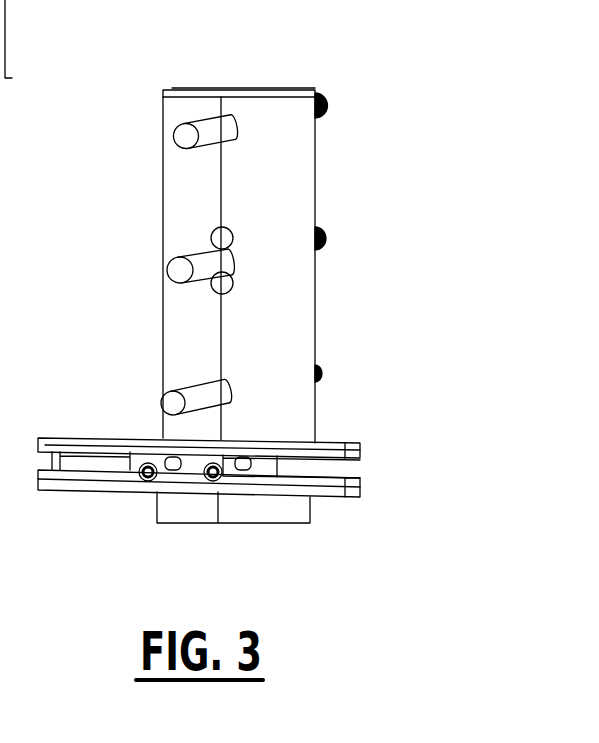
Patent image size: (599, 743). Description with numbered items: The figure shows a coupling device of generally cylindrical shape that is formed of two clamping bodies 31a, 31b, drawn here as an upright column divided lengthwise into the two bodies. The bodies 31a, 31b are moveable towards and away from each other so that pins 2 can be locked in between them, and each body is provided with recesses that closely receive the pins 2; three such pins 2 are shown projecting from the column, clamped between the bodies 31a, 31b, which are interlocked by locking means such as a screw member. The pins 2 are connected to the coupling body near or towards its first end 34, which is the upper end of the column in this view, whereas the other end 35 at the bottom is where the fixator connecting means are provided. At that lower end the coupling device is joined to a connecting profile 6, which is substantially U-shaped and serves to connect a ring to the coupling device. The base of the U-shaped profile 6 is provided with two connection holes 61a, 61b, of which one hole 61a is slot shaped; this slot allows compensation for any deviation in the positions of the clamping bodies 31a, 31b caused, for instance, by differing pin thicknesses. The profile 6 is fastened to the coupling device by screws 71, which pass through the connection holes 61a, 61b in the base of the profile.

The pins 2 is at (208, 135).
The first end 34 is at (272, 95).
The clamping body 31a is at (288, 158).
The clamping body 31b is at (173, 203).
The connecting profile 6 is at (333, 497).
The screws 71 is at (140, 480).
The connection hole 61a is at (174, 470).
The connection hole 61b is at (243, 470).
The other end 35 is at (278, 523).